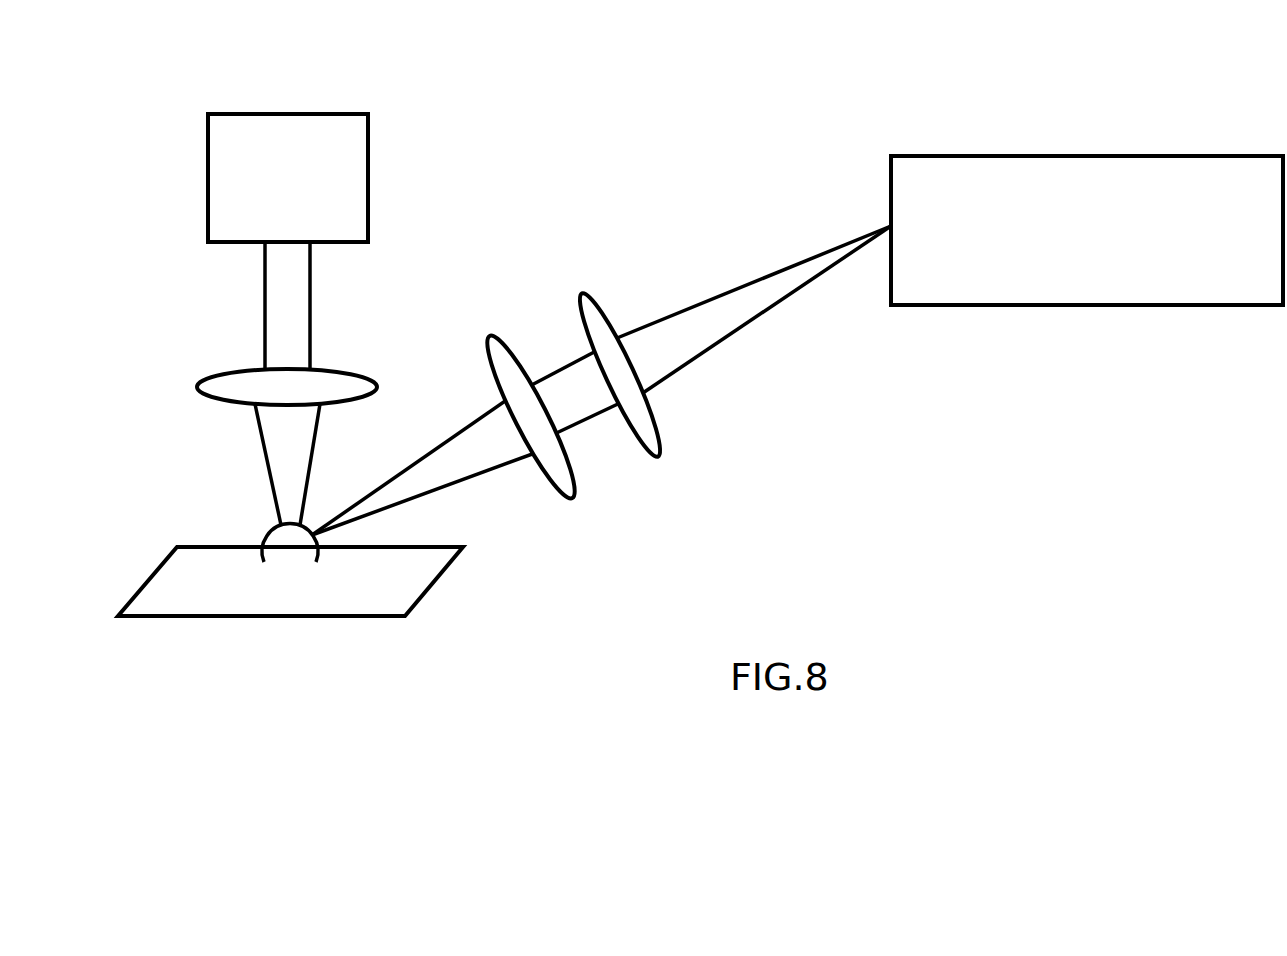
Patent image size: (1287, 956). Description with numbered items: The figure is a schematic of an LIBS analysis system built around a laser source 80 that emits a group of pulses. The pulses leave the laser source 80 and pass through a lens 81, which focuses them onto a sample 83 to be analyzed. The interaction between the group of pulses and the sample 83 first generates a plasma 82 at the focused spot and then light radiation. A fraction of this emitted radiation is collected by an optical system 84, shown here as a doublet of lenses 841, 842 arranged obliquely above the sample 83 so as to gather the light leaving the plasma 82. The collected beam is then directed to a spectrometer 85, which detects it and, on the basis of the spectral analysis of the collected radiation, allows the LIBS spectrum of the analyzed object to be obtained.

The laser source 80 is at (304, 113).
The lens 81 is at (336, 370).
The plasma 82 is at (262, 538).
The sample 83 is at (330, 618).
The optical system 84 is at (574, 383).
The lens of the doublet 841 is at (492, 333).
The lens of the doublet 842 is at (585, 293).
The spectrometer 85 is at (1165, 155).